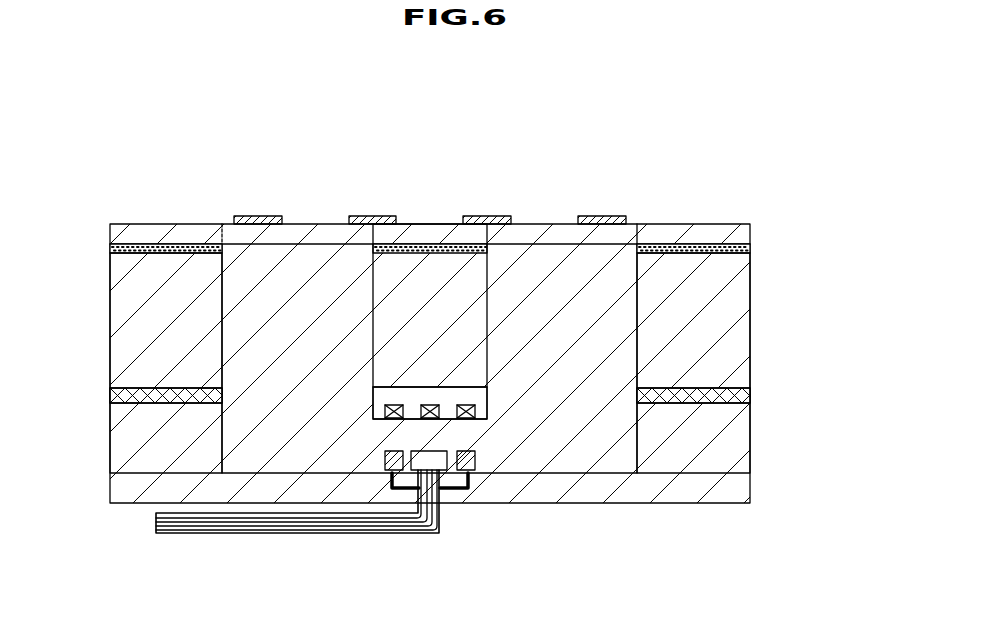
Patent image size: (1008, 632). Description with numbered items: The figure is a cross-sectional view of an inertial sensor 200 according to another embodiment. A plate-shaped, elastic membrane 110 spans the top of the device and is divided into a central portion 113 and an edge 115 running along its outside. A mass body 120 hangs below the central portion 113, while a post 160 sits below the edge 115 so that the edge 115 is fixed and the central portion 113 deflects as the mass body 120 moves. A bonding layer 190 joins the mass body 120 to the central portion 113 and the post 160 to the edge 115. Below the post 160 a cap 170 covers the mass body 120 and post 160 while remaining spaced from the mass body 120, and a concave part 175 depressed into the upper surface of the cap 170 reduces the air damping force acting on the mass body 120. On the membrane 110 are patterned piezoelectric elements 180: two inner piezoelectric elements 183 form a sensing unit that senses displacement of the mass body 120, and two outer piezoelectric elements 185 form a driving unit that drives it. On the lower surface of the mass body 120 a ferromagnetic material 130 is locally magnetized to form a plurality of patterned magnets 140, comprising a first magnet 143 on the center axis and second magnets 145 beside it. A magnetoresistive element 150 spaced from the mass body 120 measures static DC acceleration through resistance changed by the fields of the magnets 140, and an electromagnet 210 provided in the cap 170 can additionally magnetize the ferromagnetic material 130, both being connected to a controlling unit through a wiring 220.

The membrane 110 is at (753, 232).
The inertial sensor 200 is at (243, 91).
The central portion 113 is at (437, 236).
The edge 115 is at (156, 233).
The mass body 120 is at (450, 328).
The ferromagnetic material 130 is at (470, 398).
The patterned magnets 140 is at (505, 501).
The first magnet 143 is at (430, 419).
The second magnets 145 is at (393, 419).
The magnetoresistive element 150 is at (423, 463).
The post 160 is at (122, 335).
The cap 170 is at (730, 455).
The concave part 175 is at (310, 455).
The piezoelectric element 180 is at (428, 175).
The piezoelectric elements (sensing unit) 183 is at (428, 196).
The piezoelectric elements (driving unit) 185 is at (265, 215).
The bonding layer 190 is at (750, 249).
The electromagnet 210 is at (385, 470).
The wiring 220 is at (277, 527).